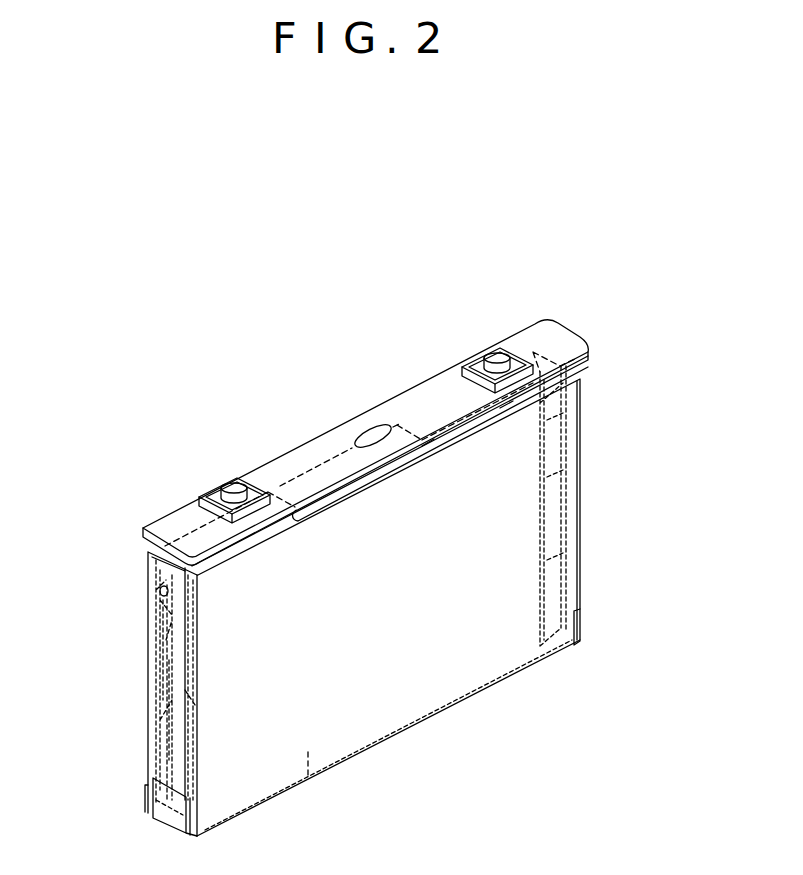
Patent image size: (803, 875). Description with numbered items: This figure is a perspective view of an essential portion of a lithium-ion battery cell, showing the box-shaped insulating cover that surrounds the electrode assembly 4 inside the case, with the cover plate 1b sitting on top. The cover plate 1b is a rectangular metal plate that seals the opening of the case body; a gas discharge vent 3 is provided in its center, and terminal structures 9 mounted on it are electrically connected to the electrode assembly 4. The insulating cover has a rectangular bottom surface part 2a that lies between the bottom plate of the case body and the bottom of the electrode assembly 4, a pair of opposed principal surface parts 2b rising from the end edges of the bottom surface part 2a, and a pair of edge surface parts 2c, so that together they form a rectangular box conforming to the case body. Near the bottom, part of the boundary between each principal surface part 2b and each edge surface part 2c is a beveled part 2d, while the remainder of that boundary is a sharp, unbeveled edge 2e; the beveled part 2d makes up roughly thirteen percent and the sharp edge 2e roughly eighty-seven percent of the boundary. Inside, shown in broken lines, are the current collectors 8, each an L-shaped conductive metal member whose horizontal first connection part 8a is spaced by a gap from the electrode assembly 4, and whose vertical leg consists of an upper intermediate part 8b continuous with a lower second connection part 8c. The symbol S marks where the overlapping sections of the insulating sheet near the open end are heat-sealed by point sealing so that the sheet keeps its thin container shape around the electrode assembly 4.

The cover plate 1b is at (320, 446).
The terminal structure 9 is at (210, 478).
The gas discharge vent 3 is at (373, 433).
The bottom surface part 2a is at (308, 780).
The principal surface part 2b is at (473, 662).
The edge surface part 2c is at (160, 745).
The beveled part 2d is at (150, 797).
The sharp edge 2e is at (148, 703).
The current collector 8 is at (147, 572).
The first connection part 8a is at (523, 400).
The intermediate part 8b is at (150, 596).
The second connection part 8c is at (157, 690).
The point seal S is at (160, 592).
The electrode assembly 4 is at (378, 697).